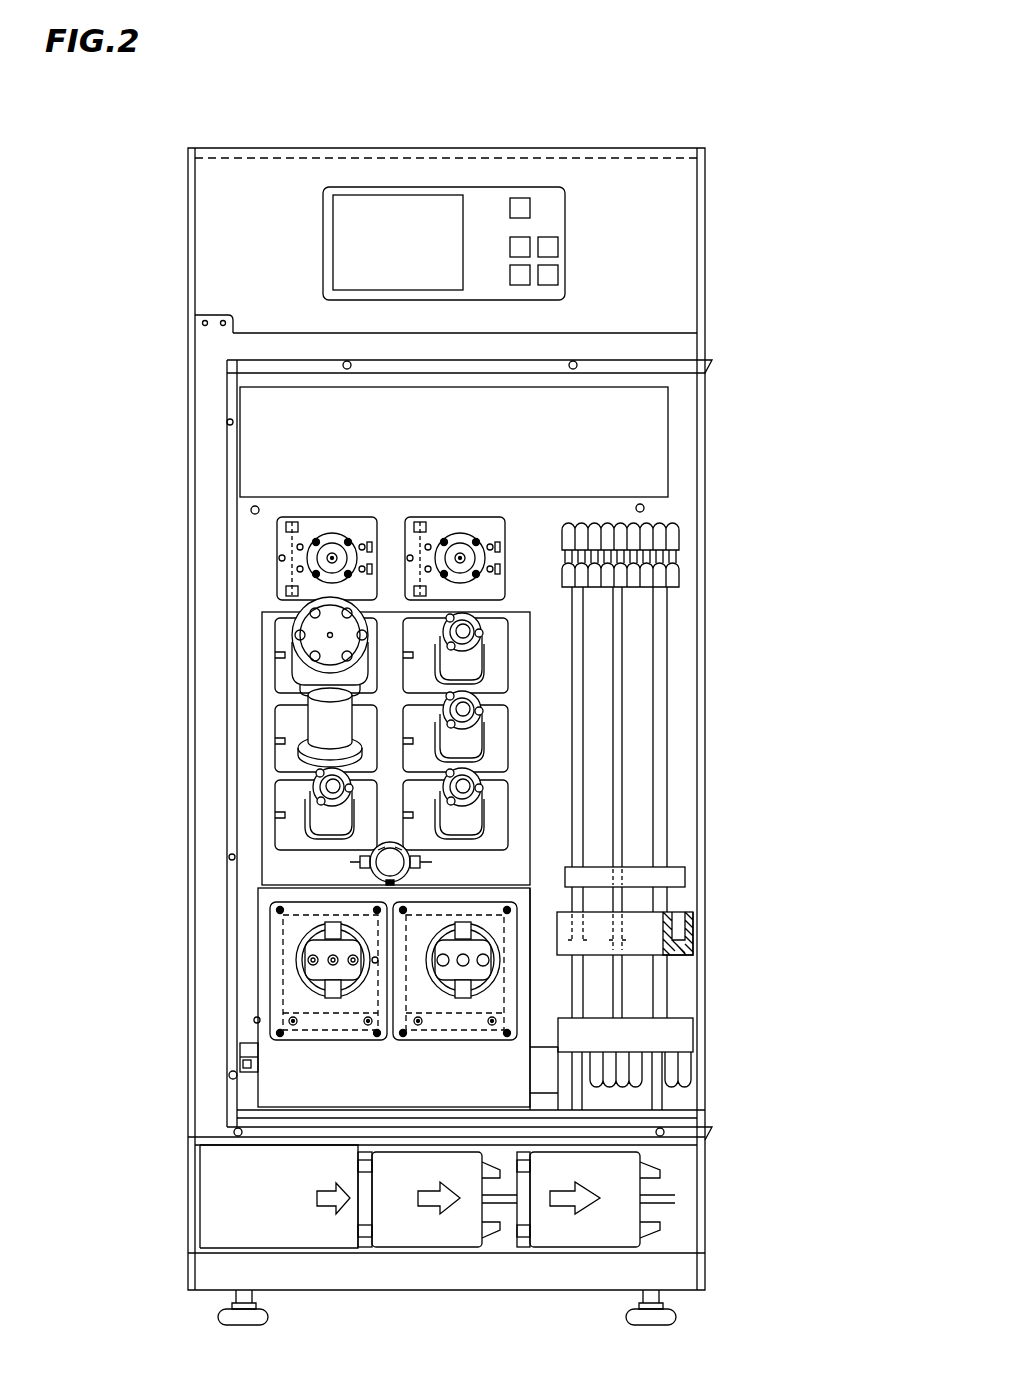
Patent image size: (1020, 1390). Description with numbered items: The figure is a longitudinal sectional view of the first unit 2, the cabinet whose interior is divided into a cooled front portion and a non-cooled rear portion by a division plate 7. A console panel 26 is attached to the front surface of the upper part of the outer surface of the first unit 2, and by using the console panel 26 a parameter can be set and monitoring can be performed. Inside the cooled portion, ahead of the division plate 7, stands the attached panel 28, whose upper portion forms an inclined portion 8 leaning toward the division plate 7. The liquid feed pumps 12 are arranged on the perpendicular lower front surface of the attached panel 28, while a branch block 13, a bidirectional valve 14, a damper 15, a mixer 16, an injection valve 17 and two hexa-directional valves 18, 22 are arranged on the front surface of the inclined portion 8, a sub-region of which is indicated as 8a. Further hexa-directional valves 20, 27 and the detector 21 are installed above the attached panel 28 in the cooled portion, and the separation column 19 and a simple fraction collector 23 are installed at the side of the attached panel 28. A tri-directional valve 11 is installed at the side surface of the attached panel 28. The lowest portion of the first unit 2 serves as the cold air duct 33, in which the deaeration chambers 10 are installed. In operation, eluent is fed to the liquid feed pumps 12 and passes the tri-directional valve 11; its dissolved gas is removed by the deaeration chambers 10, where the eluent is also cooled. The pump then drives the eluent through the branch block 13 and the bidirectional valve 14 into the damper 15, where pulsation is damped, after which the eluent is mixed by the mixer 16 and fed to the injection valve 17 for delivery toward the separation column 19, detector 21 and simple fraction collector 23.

The first unit 2 is at (656, 84).
The console panel 26 is at (360, 210).
The detector 21 is at (287, 418).
The division plate 7 is at (257, 538).
The hexa-directional valve 27 is at (275, 545).
The hexa-directional valve 20 is at (460, 548).
The inclined portion 8 is at (322, 748).
The mounting box 8a is at (290, 828).
The mixer 16 is at (302, 640).
The damper 15 is at (295, 730).
The bidirectional valve 14 is at (300, 807).
The injection valve 17 is at (487, 645).
The hexa-directional valve 18 is at (487, 725).
The hexa-directional valve 22 is at (487, 818).
The branch block 13 is at (372, 878).
The separation column 19 is at (678, 740).
The simple fraction collector 23 is at (650, 920).
The attached panel 28 is at (470, 1080).
The liquid feed pump 12 is at (443, 985).
The tri-directional valve 11 is at (258, 1050).
The cold air duct 33 is at (326, 1235).
The deaeration chamber 10 is at (423, 1230).